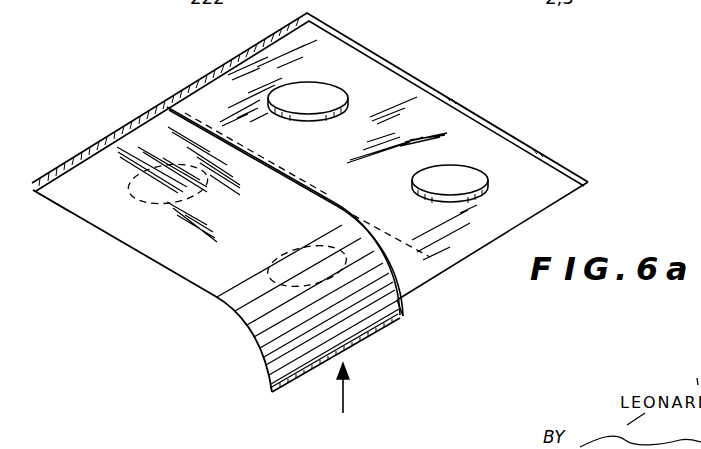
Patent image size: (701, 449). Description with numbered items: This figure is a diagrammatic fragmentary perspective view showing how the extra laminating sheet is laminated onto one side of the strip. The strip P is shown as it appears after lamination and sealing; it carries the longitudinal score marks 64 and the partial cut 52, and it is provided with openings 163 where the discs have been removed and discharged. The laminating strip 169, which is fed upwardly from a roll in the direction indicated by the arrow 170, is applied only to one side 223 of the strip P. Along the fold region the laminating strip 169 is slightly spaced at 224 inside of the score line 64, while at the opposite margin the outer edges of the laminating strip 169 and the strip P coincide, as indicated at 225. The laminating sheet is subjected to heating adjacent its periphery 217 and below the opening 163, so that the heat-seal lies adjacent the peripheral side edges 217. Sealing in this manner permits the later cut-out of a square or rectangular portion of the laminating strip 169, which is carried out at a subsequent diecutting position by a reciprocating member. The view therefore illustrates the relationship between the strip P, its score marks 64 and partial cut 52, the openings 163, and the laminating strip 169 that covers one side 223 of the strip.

The strip P is at (418, 92).
The partial cut 52 is at (168, 103).
The longitudinal score marks 64 is at (352, 208).
The openings 163 is at (340, 87).
The laminating strip 169 is at (285, 376).
The arrow 170 is at (350, 393).
The periphery 217 is at (153, 262).
The one side of the strip 223 is at (412, 284).
The spacing inside of the score line 224 is at (308, 187).
The coinciding outer edges 225 is at (57, 197).